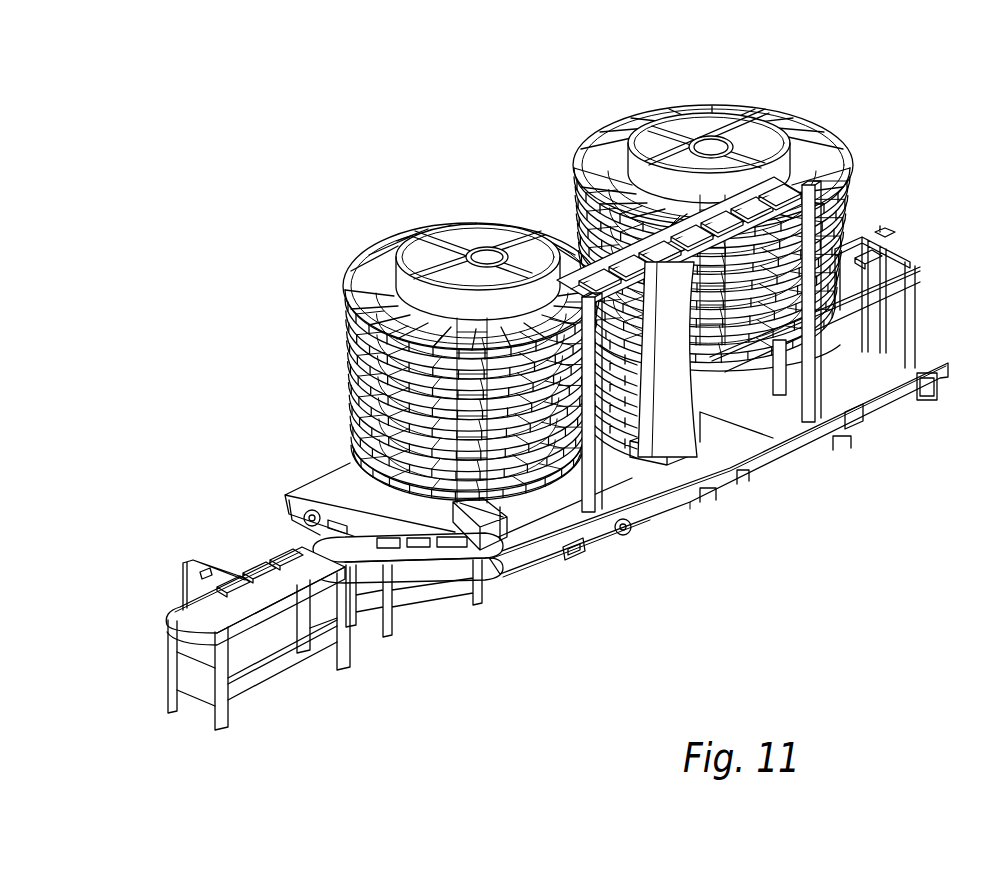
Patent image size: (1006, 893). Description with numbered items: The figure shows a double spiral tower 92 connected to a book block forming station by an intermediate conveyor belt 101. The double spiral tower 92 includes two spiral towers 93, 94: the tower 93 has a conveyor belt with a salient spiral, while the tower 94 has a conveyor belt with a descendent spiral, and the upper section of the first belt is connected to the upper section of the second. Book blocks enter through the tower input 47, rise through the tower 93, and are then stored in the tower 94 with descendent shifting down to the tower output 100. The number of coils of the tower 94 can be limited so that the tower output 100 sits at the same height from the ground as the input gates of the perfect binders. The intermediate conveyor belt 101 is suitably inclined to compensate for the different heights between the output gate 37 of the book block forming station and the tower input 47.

The double spiral tower 92 is at (458, 78).
The spiral tower 93 is at (388, 217).
The spiral tower 94 is at (650, 72).
The tower output 100 is at (927, 260).
The intermediate conveyor belt 101 is at (305, 538).
The tower input 47 is at (442, 523).
The output gate 37 is at (88, 662).